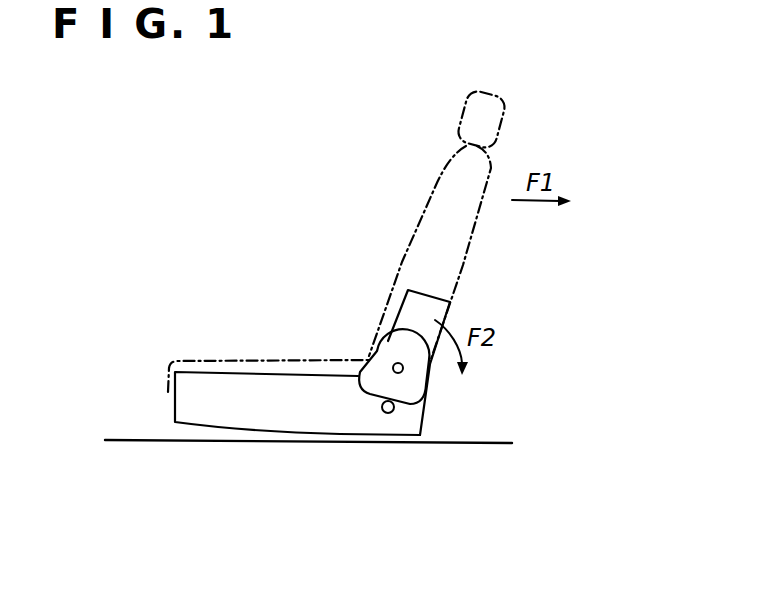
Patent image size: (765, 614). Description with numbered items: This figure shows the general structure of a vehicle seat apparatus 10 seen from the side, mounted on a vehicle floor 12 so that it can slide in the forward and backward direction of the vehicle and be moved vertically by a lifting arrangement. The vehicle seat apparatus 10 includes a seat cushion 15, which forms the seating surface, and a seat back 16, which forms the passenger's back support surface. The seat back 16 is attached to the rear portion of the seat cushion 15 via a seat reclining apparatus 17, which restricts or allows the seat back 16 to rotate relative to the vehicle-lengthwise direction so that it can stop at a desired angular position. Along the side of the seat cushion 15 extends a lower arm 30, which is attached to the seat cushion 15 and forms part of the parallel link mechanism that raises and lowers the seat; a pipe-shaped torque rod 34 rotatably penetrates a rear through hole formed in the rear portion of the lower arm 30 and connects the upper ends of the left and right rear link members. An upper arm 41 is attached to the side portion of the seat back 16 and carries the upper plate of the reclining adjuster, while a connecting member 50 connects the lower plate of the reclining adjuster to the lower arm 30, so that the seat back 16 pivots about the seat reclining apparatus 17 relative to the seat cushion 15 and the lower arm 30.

The vehicle seat apparatus 10 is at (340, 219).
The vehicle floor 12 is at (490, 442).
The seat cushion 15 is at (282, 364).
The seat back 16 is at (431, 213).
The seat reclining apparatus 17 is at (396, 328).
The lower arm 30 is at (188, 397).
The torque rod 34 is at (390, 413).
The upper arm 41 is at (447, 308).
The connecting member 50 is at (367, 372).